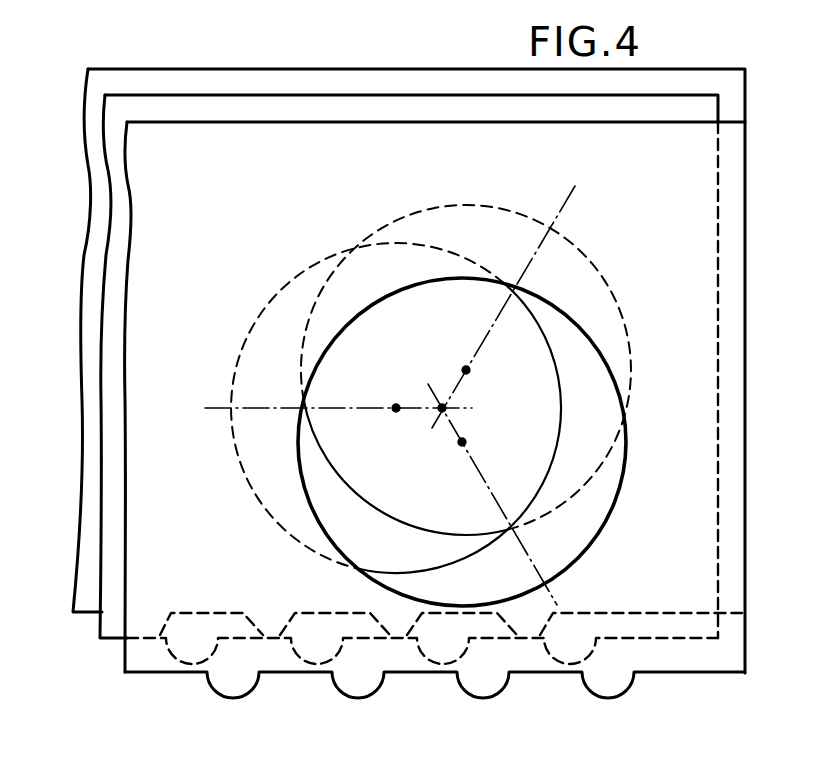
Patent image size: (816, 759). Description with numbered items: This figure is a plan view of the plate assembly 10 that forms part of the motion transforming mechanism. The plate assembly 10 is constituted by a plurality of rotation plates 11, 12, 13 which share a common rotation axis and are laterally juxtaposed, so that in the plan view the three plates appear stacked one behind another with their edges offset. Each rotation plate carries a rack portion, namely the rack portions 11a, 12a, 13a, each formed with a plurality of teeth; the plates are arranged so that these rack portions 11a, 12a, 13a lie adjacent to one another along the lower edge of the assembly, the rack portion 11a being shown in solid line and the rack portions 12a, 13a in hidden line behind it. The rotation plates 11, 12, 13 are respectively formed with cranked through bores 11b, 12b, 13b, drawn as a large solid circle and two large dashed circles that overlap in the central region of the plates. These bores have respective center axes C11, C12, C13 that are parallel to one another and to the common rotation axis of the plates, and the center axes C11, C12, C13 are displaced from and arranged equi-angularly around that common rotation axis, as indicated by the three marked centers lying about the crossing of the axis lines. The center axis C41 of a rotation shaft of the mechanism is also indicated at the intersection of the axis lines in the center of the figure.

The plate assembly 10 is at (62, 99).
The rotation plate 11 is at (189, 122).
The rack portion 11a is at (496, 690).
The cranked through bore 11b is at (578, 558).
The rotation plate 12 is at (263, 95).
The rack portion 12a is at (444, 660).
The cranked through bore 12b is at (262, 312).
The rotation plate 13 is at (359, 69).
The rack portion 13a is at (405, 640).
The cranked through bore 13b is at (397, 222).
The center axis C11 is at (465, 444).
The center axis C12 is at (395, 405).
The center axis C13 is at (468, 373).
The center axis C41 is at (440, 416).